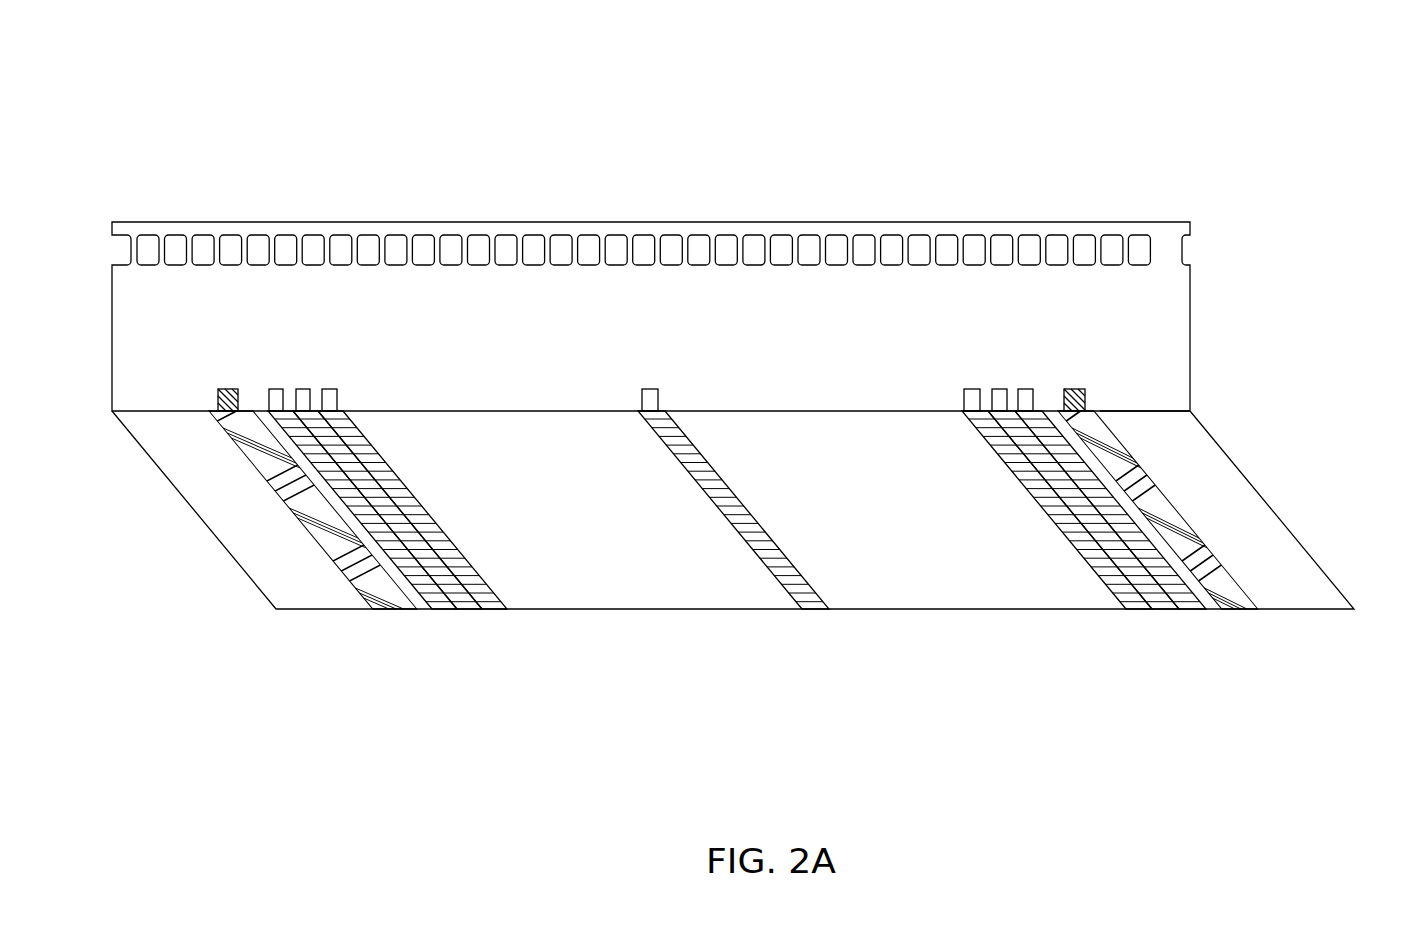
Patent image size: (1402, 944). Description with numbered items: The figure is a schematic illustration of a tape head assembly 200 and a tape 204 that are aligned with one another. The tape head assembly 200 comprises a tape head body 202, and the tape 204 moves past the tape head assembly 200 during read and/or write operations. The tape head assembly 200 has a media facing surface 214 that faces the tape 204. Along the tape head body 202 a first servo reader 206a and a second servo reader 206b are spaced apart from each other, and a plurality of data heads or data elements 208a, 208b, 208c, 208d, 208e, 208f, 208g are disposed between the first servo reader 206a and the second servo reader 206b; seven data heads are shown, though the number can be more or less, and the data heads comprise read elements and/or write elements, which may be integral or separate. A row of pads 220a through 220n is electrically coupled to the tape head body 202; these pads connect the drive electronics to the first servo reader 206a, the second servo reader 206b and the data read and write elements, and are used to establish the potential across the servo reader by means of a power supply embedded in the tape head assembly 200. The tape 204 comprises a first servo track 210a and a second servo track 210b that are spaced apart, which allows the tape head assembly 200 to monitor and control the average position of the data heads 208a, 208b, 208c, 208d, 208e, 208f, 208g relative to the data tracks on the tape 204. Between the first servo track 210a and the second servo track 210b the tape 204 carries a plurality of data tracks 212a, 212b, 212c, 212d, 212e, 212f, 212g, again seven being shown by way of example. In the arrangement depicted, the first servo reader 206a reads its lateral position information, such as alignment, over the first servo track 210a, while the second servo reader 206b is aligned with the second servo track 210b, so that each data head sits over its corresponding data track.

The tape head assembly 200 is at (218, 72).
The tape head body 202 is at (1190, 302).
The tape 204 is at (1273, 511).
The first servo reader 206a is at (230, 389).
The second servo reader 206b is at (1073, 389).
The data head 208a is at (278, 388).
The data head 208b is at (303, 388).
The data head 208c is at (330, 388).
The data head 208d is at (650, 388).
The data head 208e is at (973, 388).
The data head 208f is at (1000, 388).
The data head 208g is at (1025, 388).
The first servo track 210a is at (397, 612).
The second servo track 210b is at (1237, 612).
The data track 212a is at (443, 612).
The data track 212b is at (468, 612).
The data track 212c is at (493, 612).
The data track 212d is at (818, 612).
The data track 212e is at (1140, 612).
The data track 212f is at (1165, 612).
The data track 212g is at (1192, 612).
The media facing surface 214 is at (1143, 410).
The pad 220a is at (205, 233).
The pad 220n is at (1112, 233).